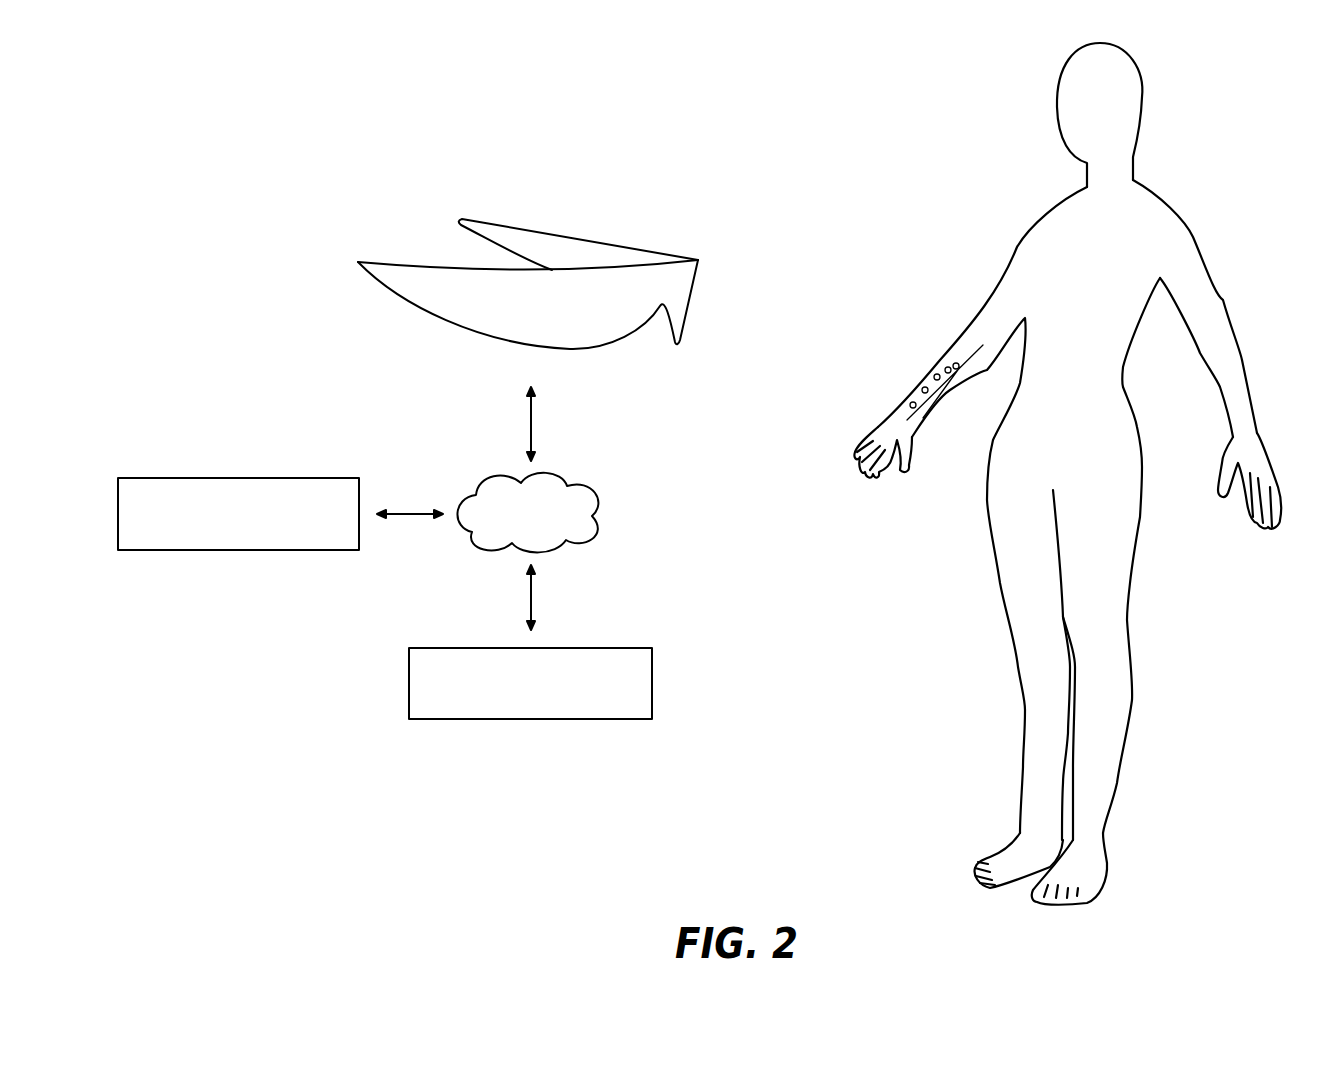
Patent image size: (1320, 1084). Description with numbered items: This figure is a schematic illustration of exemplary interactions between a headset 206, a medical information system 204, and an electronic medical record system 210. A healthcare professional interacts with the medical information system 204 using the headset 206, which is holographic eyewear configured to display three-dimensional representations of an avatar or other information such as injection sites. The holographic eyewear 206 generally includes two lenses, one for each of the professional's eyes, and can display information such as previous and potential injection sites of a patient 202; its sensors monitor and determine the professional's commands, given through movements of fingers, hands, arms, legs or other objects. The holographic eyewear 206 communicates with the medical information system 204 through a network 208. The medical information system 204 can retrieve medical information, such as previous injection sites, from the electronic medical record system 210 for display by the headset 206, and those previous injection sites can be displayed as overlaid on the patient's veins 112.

The veins 112 is at (918, 398).
The patient 202 is at (1067, 474).
The medical information system 204 is at (530, 683).
The headset 206 is at (358, 262).
The network 208 is at (527, 513).
The electronic medical record system 210 is at (238, 514).